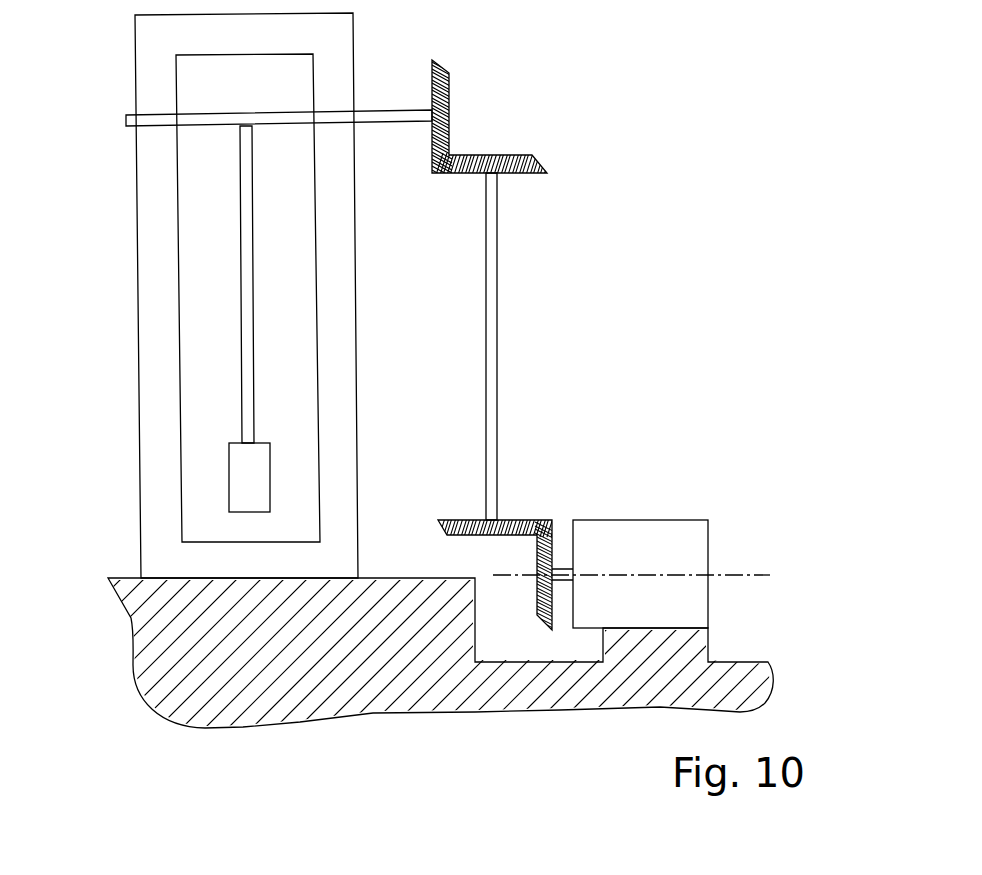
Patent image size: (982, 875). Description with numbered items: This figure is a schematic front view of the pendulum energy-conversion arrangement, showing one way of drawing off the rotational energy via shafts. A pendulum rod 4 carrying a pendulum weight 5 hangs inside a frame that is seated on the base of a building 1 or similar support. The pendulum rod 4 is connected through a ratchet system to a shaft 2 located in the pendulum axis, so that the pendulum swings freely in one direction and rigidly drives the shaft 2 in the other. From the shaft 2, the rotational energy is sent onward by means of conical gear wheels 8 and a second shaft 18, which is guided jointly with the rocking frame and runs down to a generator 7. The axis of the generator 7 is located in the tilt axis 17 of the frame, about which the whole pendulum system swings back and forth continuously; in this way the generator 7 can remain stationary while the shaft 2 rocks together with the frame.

The base of a building 1 is at (163, 622).
The shaft 2 is at (400, 118).
The pendulum rod 4 is at (252, 312).
The pendulum weight 5 is at (257, 452).
The generator 7 is at (643, 540).
The conical gear wheels 8 is at (445, 68).
The tilt axis 17 is at (740, 575).
The second shaft 18 is at (496, 331).